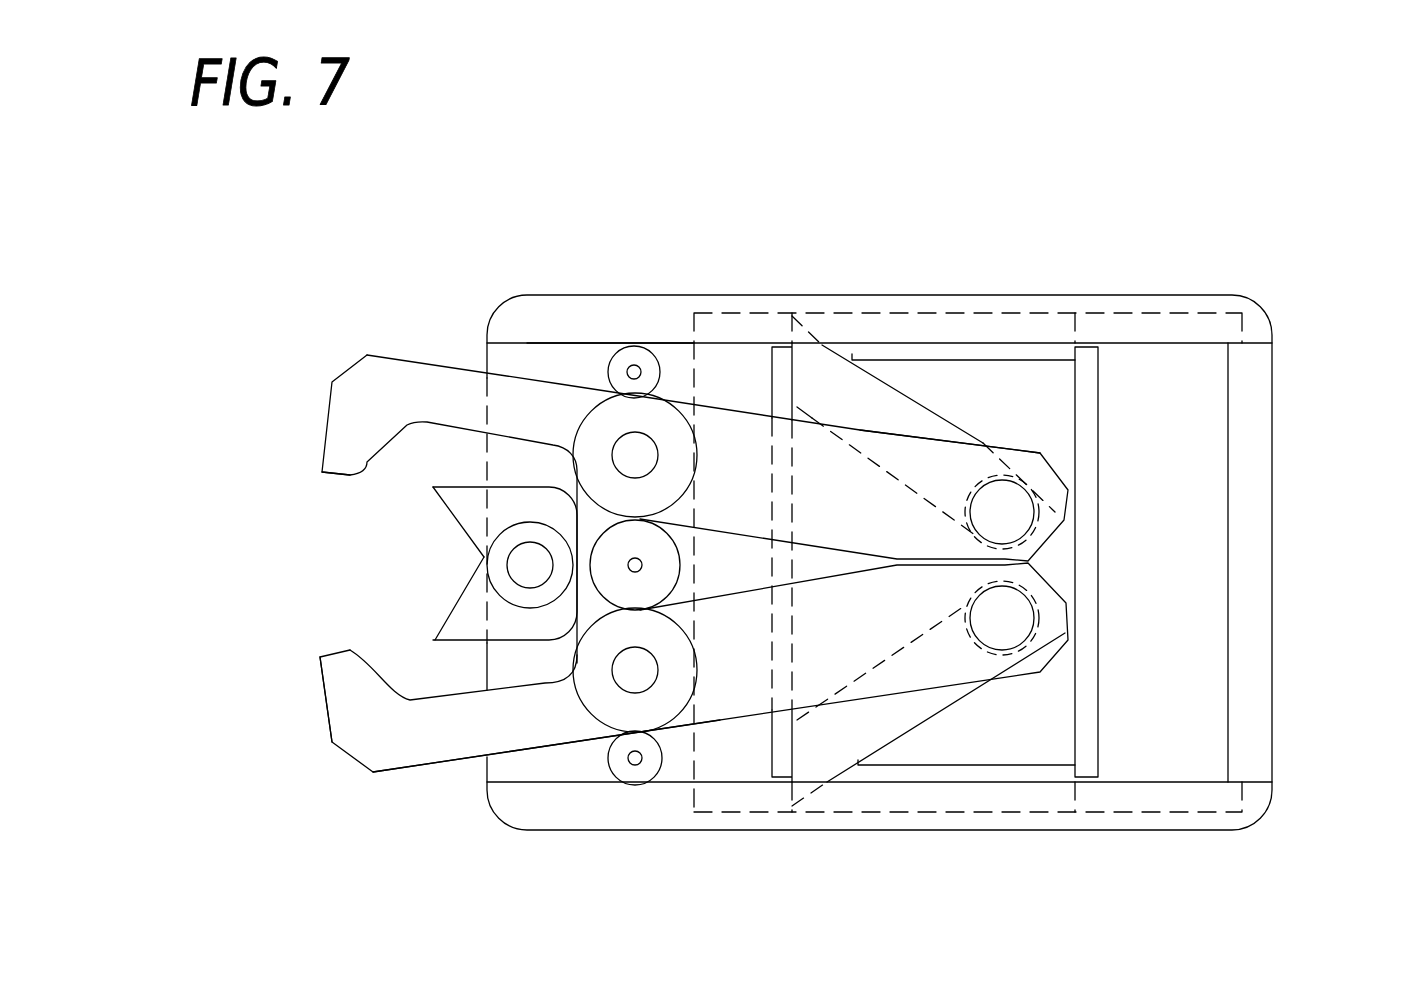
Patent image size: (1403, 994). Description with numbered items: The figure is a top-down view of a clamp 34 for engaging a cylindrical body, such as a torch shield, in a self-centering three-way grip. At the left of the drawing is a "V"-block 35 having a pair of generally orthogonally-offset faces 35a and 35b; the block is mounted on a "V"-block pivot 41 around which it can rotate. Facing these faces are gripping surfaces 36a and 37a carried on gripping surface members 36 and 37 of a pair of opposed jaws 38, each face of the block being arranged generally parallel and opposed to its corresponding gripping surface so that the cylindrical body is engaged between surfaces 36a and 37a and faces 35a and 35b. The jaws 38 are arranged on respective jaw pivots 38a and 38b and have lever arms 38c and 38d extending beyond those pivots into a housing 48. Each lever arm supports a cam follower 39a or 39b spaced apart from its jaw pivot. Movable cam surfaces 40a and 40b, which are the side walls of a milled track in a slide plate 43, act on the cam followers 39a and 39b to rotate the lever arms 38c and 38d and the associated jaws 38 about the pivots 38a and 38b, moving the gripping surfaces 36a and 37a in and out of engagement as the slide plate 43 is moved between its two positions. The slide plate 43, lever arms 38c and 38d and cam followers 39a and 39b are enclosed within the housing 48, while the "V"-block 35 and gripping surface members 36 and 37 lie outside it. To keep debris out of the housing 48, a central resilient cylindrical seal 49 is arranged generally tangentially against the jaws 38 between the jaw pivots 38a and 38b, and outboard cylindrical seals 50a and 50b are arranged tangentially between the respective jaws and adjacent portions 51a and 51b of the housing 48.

The clamp 34 is at (677, 370).
The V-block 35 is at (500, 497).
The orthogonally-offset face of V-block 35a is at (460, 519).
The orthogonally-offset face of V-block 35b is at (467, 602).
The gripping surface member 36 is at (435, 418).
The gripping surface 36a is at (367, 465).
The gripping surface member 37 is at (410, 756).
The gripping surface 37a is at (281, 694).
The jaws 38 is at (476, 770).
The jaw pivot 38a is at (652, 440).
The jaw pivot 38b is at (658, 683).
The lever arm 38c is at (838, 462).
The lever arm 38d is at (750, 700).
The cam follower 39a is at (1004, 511).
The cam follower 39b is at (1006, 619).
The cam surface 40a is at (1061, 552).
The cam surface 40b is at (915, 700).
The V-block pivot 41 is at (532, 578).
The slide plate 43 is at (1045, 434).
The housing 48 is at (1113, 297).
The central resilient cylindrical seal 49 is at (665, 562).
The outboard cylindrical seal 50a is at (617, 367).
The outboard cylindrical seal 50b is at (628, 773).
The adjacent portion of housing 51a is at (633, 357).
The adjacent portion of housing 51b is at (637, 782).